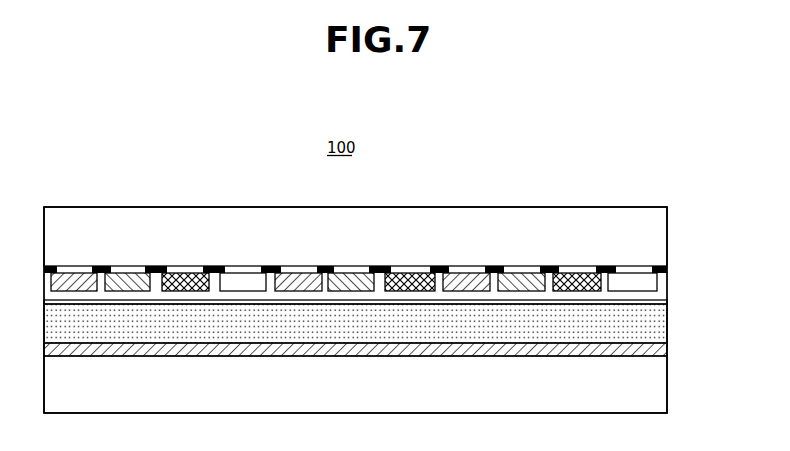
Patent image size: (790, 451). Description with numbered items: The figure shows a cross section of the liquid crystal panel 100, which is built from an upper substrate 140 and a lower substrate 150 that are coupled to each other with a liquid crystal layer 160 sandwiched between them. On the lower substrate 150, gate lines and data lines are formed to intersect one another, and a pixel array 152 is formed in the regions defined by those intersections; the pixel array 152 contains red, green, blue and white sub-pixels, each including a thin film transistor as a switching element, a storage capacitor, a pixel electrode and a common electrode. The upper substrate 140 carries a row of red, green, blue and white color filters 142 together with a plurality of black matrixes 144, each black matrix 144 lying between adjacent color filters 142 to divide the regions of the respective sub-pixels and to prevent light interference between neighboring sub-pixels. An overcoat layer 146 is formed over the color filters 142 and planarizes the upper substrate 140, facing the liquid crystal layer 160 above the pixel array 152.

The liquid crystal panel 100 is at (355, 276).
The upper substrate 140 is at (663, 223).
The black matrix 144 is at (667, 270).
The color filter 142 is at (656, 287).
The overcoat layer 146 is at (662, 302).
The liquid crystal layer 160 is at (662, 328).
The pixel array 152 is at (665, 352).
The lower substrate 150 is at (662, 388).